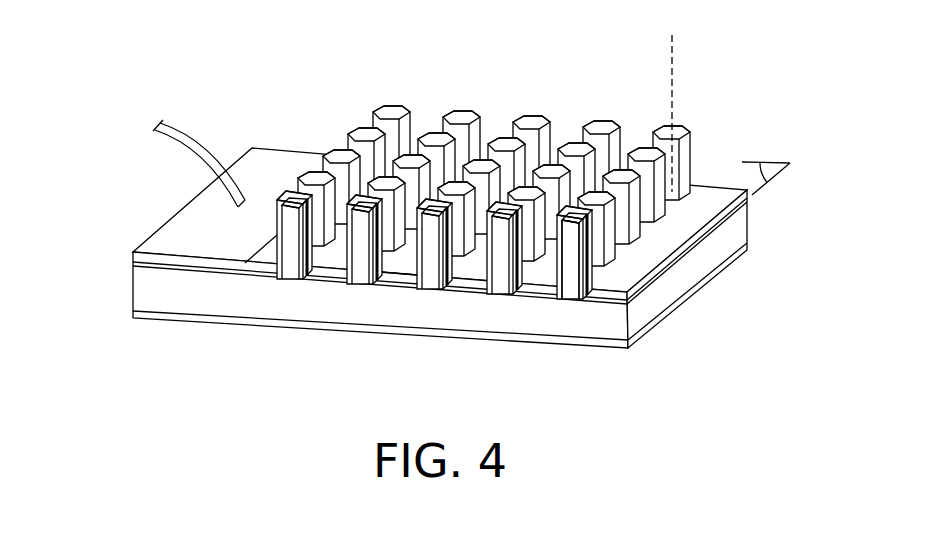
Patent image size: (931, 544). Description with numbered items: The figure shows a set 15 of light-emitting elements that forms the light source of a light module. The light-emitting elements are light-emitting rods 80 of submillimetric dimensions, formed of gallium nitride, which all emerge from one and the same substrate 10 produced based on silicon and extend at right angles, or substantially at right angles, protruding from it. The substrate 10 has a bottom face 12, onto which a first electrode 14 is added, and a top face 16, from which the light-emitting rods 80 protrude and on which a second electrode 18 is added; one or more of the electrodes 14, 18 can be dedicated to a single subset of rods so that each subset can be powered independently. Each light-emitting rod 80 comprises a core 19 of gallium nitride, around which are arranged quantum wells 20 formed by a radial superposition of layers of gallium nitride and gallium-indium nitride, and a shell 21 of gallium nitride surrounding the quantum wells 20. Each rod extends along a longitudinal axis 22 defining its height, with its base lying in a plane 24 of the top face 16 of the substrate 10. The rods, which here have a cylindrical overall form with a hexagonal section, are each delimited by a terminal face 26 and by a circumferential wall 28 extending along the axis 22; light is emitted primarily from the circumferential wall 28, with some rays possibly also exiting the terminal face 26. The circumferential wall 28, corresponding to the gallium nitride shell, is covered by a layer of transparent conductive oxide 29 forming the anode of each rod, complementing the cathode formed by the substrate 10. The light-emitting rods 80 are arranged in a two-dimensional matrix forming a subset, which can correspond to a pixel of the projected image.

The substrate 10 is at (165, 292).
The bottom face 12 is at (212, 325).
The first electrode 14 is at (273, 323).
The set of light-emitting elements 15 is at (123, 152).
The top face 16 is at (622, 288).
The second electrode 18 is at (272, 165).
The core 19 is at (573, 285).
The quantum wells 20 is at (558, 285).
The shell 21 is at (312, 263).
The longitudinal axis 22 is at (673, 48).
The plane 24 is at (779, 179).
The terminal face 26 is at (463, 117).
The circumferential wall 28 is at (588, 137).
The layer of transparent conductive oxide 29 is at (410, 277).
The light-emitting rods 80 is at (687, 140).